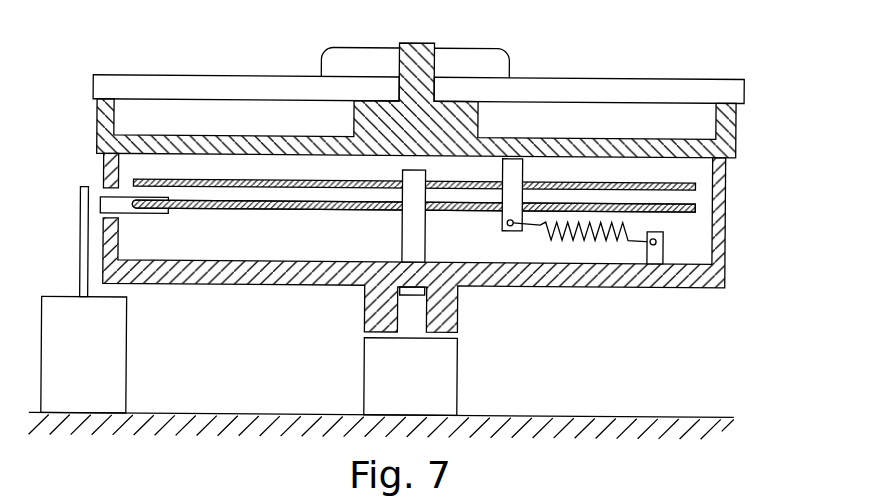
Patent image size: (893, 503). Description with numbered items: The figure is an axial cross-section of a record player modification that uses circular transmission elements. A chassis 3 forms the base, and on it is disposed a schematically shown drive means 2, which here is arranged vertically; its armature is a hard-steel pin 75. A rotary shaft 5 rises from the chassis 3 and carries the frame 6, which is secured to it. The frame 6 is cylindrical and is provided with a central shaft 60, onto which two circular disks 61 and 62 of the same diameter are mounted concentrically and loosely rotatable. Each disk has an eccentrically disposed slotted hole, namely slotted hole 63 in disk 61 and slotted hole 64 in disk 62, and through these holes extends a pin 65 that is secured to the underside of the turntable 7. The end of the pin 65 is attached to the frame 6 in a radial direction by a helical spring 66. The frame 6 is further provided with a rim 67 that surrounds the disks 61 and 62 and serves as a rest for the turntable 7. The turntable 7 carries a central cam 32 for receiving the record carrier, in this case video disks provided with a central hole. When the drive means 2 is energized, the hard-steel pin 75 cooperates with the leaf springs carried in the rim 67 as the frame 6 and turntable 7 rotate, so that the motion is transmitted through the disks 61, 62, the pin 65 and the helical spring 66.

The drive means 2 is at (130, 368).
The chassis 3 is at (222, 415).
The rotary shaft 5 is at (375, 368).
The frame 6 is at (675, 282).
The turntable 7 is at (632, 146).
The central cam 32 is at (426, 60).
The central shaft 60 is at (410, 231).
The circular disk 61 is at (695, 208).
The circular disk 62 is at (695, 186).
The slotted hole 63 is at (497, 207).
The slotted hole 64 is at (490, 183).
The pin 65 is at (516, 226).
The helical spring 66 is at (604, 237).
The rim 67 is at (718, 181).
The hard-steel pin 75 is at (83, 247).